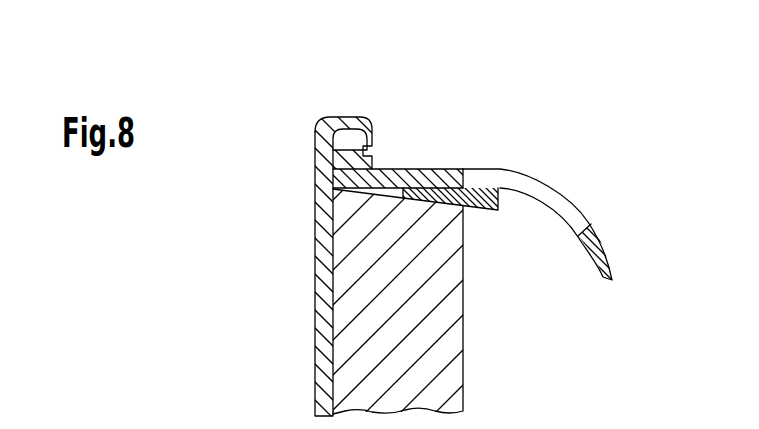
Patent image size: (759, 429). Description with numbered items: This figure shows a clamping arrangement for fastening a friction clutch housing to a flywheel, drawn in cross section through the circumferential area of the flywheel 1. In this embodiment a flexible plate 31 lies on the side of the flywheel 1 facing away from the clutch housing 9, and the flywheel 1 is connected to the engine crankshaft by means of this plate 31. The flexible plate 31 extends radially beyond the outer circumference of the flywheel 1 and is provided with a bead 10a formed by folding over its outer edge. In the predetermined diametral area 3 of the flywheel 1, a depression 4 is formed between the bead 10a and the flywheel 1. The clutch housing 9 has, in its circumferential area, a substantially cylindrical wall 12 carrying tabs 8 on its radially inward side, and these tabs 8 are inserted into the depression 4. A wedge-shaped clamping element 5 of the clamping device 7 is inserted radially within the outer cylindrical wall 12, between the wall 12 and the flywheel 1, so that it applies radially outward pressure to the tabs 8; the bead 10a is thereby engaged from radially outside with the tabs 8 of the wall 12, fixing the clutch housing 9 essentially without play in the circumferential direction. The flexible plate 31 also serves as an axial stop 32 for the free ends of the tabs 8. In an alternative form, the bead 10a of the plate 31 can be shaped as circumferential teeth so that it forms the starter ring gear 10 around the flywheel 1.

The flywheel 1 is at (452, 383).
The diametral area 3 is at (433, 169).
The depression 4 is at (403, 197).
The clamping element 5 is at (472, 212).
The clamping device 7 is at (507, 213).
The tab 8 is at (412, 169).
The clutch housing 9 is at (603, 279).
The starter ring gear 10 is at (338, 124).
The bead 10a is at (357, 140).
The cylindrical wall 12 is at (455, 171).
The flexible plate 31 is at (325, 237).
The axial stop 32 is at (320, 170).